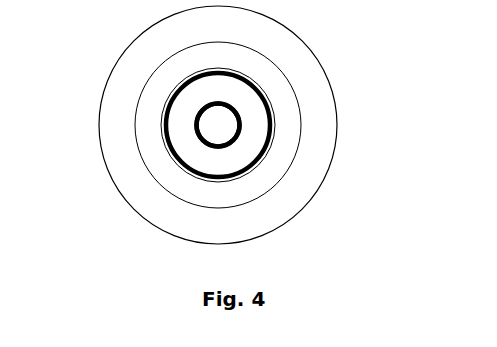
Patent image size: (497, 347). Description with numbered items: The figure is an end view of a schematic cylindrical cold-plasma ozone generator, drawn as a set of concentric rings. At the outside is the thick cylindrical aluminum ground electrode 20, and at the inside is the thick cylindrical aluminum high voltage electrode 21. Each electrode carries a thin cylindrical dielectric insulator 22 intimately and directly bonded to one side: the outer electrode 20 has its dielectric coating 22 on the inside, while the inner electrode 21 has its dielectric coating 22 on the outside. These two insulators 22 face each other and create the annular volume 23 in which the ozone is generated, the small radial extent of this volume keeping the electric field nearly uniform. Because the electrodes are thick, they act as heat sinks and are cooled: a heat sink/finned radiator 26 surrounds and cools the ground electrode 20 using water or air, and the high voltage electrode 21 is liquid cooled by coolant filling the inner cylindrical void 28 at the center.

The ground electrode 20 is at (231, 149).
The high voltage electrode 21 is at (217, 140).
The cylindrical dielectric insulators 22 is at (240, 128).
The volume 23 is at (278, 102).
The heat sink/finned radiator 26 is at (302, 193).
The inner cylindrical void 28 is at (217, 124).